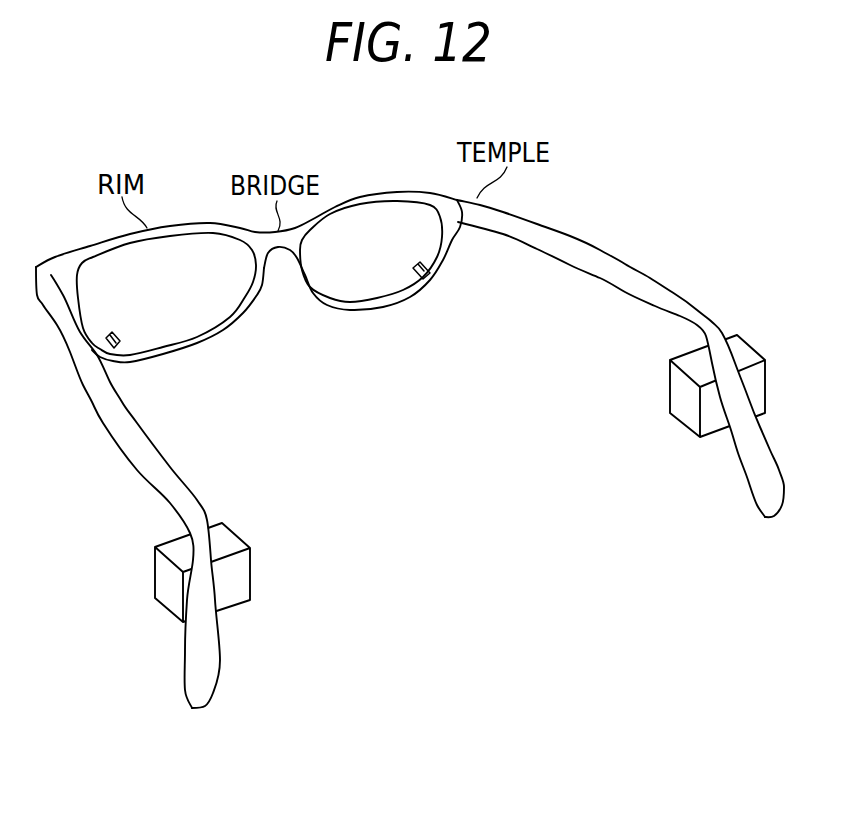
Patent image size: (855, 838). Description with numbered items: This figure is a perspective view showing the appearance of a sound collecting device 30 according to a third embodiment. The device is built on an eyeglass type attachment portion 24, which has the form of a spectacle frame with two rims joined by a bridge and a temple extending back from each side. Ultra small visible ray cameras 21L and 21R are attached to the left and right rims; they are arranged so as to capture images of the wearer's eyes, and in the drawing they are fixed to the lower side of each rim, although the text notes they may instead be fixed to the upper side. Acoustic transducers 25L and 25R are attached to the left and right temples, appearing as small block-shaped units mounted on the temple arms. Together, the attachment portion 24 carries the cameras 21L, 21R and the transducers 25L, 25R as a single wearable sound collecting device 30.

The sound collecting device 30 is at (412, 406).
The eyeglass type attachment portion 24 is at (568, 238).
The ultra small visible ray camera 21L is at (420, 281).
The ultra small visible ray camera 21R is at (124, 351).
The acoustic transducer 25L is at (753, 347).
The acoustic transducer 25R is at (153, 573).